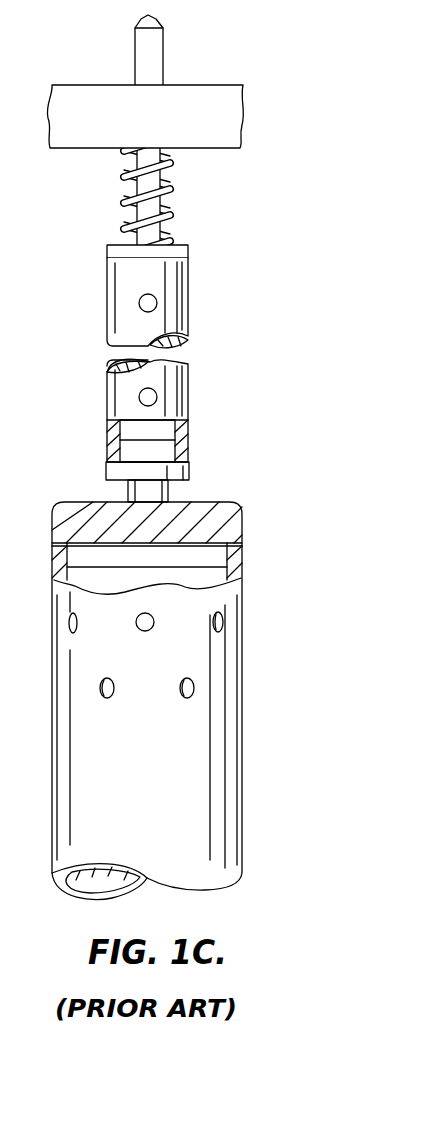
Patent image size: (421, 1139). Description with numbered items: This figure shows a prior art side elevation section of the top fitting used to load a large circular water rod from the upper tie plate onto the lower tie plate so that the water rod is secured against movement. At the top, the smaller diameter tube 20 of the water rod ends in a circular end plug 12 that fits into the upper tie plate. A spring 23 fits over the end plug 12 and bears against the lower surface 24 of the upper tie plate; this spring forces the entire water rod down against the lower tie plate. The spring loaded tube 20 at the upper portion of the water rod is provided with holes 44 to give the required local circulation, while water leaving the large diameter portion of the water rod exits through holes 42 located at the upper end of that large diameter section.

The end plug 12 is at (165, 59).
The lower surface of the upper tie plate 24 is at (216, 150).
The spring 23 is at (170, 201).
The small diameter tube 20 is at (190, 280).
The holes 44 is at (157, 300).
The holes 42 is at (227, 628).